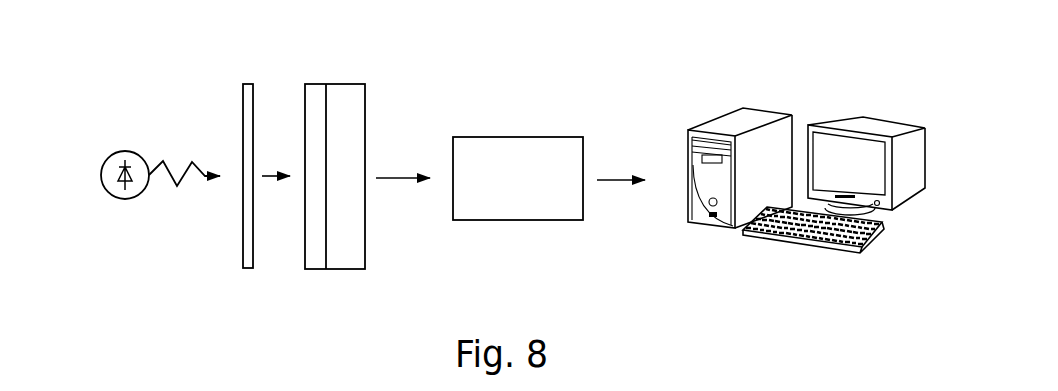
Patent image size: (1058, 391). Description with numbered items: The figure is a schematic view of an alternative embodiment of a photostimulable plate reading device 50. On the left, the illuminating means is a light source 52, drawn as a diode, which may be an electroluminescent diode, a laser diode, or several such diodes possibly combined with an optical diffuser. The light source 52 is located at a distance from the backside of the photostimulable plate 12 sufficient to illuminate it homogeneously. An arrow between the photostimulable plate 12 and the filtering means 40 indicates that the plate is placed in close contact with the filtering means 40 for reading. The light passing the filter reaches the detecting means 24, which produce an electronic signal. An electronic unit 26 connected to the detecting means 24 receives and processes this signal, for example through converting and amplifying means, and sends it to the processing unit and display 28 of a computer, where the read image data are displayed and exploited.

The device 50 is at (94, 87).
The light source 52 is at (106, 186).
The photostimulable plate 12 is at (248, 70).
The filtering means 40 is at (312, 70).
The detecting means 24 is at (346, 286).
The electronic unit 26 is at (520, 137).
The processing unit and display 28 is at (813, 92).